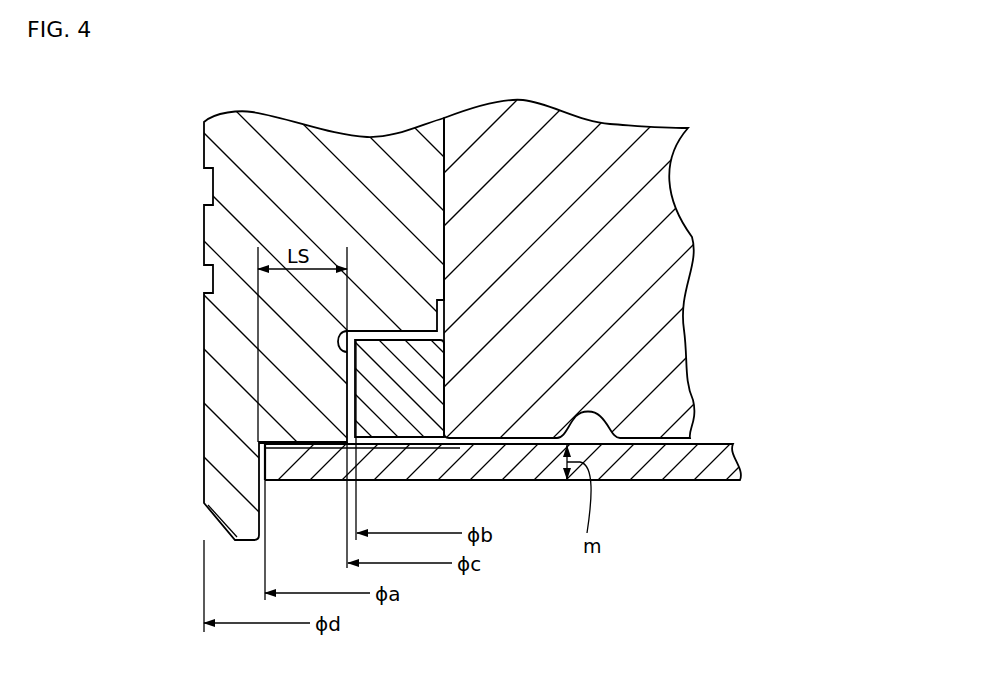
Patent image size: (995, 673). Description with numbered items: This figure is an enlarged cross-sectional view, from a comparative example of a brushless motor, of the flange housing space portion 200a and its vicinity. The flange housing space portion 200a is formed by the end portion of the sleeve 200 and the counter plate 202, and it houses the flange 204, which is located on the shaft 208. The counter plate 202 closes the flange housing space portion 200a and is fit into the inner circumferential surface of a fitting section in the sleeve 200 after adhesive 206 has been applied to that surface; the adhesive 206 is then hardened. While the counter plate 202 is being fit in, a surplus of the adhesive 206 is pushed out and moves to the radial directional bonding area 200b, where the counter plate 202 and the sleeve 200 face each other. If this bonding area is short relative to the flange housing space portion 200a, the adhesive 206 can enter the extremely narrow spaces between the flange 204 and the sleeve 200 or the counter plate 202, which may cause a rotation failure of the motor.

The sleeve 200 is at (262, 165).
The flange housing space portion 200a is at (355, 412).
The radial directional bonding area 200b is at (316, 447).
The counter plate 202 is at (648, 467).
The flange 204 is at (398, 375).
The adhesive 206 is at (262, 466).
The shaft 208 is at (620, 135).